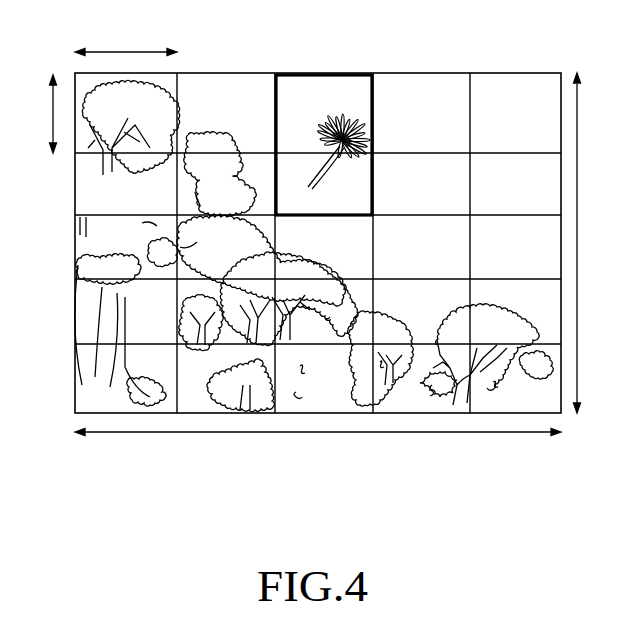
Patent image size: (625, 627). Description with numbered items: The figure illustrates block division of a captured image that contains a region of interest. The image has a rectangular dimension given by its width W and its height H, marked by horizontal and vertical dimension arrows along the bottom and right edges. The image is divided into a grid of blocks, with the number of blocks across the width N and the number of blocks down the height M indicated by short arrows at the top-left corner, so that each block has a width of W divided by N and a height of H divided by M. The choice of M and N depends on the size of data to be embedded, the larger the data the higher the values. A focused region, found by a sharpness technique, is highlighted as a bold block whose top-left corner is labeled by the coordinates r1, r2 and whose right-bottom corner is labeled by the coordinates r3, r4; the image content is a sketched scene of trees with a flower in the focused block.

The number of blocks along the width N is at (126, 44).
The number of blocks along the height M is at (45, 114).
The width of the image W is at (318, 445).
The height of the image H is at (586, 243).
The top-left row coordinate of the focused region r1 is at (311, 131).
The top-left column coordinate of the focused region r2 is at (311, 131).
The right-bottom row coordinate of the focused region r3 is at (372, 160).
The right-bottom column coordinate of the focused region r4 is at (372, 160).